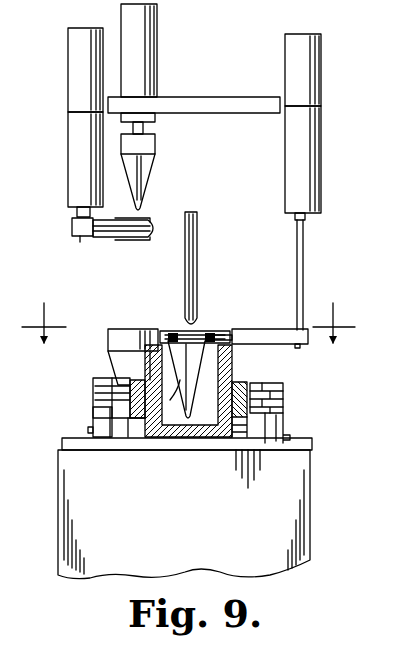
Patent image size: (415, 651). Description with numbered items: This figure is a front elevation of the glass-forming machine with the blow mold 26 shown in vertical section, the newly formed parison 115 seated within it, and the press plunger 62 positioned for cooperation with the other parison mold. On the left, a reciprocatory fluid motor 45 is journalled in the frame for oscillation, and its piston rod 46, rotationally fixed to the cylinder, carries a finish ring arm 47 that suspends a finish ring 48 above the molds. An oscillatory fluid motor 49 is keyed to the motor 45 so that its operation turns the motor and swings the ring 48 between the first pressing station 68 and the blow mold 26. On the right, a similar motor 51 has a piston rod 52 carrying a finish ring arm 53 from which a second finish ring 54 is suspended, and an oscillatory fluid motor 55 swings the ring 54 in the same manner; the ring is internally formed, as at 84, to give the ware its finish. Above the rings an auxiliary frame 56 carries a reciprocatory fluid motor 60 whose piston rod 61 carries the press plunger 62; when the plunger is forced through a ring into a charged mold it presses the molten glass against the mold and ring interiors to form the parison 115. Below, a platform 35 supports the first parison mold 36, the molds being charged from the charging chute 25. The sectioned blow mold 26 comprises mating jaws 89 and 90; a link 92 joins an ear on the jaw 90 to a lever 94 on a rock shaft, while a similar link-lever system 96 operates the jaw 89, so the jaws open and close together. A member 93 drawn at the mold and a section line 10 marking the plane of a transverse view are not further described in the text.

The section line 10- 10 is at (188, 334).
The charging chute 25 is at (197, 236).
The blow mold 26 is at (250, 372).
The platform 35 is at (132, 440).
The first parison mold 36 is at (108, 341).
The reciprocatory fluid motor 45 is at (70, 158).
The piston rod 46 is at (80, 240).
The finish ring arm 47 is at (98, 240).
The finish ring 48 is at (150, 215).
The oscillatory fluid motor 49 is at (78, 58).
The motor 51 is at (290, 150).
The piston rod 52 is at (298, 265).
The finish ring arm 53 is at (258, 330).
The second finish ring 54 is at (216, 318).
The oscillatory fluid motor 55 is at (300, 62).
The auxiliary frame 56 is at (210, 97).
The reciprocatory fluid motor 60 is at (155, 42).
The piston rod 61 is at (143, 128).
The press plunger 62 is at (152, 175).
The first pressing station 68 is at (104, 325).
The internal finish-forming surface 84 is at (198, 330).
The blow mold jaw 89 is at (243, 376).
The blow mold jaw 90 is at (138, 385).
The link 92 is at (112, 389).
The heater housing 93 is at (120, 385).
The lever 94 is at (100, 404).
The link-lever system 96 is at (262, 380).
The parison 115 is at (168, 440).